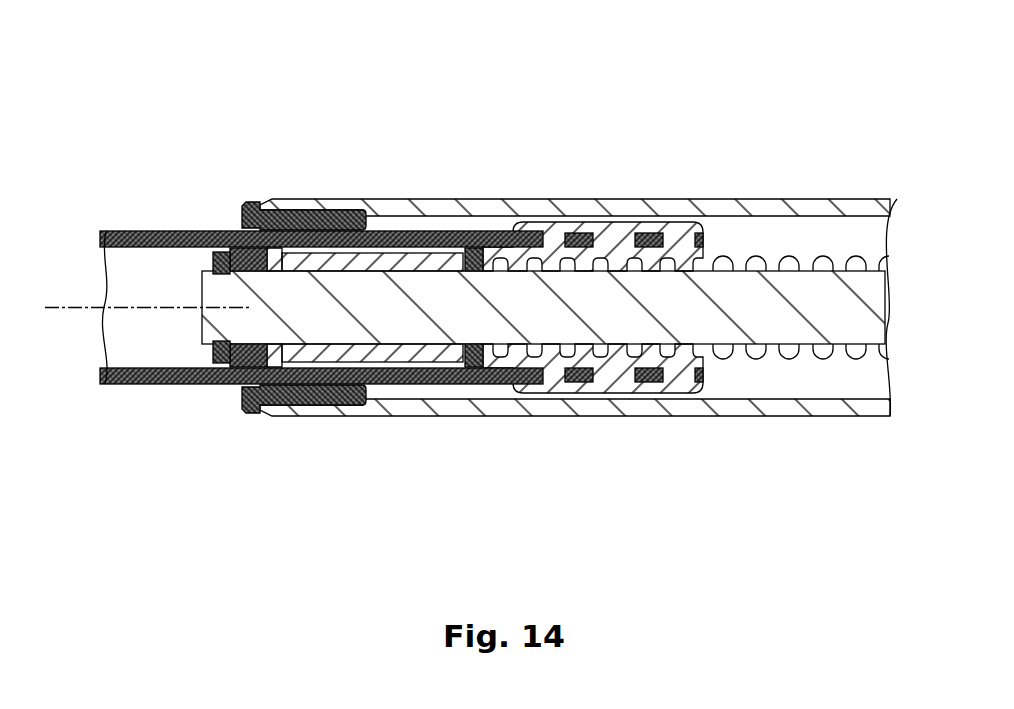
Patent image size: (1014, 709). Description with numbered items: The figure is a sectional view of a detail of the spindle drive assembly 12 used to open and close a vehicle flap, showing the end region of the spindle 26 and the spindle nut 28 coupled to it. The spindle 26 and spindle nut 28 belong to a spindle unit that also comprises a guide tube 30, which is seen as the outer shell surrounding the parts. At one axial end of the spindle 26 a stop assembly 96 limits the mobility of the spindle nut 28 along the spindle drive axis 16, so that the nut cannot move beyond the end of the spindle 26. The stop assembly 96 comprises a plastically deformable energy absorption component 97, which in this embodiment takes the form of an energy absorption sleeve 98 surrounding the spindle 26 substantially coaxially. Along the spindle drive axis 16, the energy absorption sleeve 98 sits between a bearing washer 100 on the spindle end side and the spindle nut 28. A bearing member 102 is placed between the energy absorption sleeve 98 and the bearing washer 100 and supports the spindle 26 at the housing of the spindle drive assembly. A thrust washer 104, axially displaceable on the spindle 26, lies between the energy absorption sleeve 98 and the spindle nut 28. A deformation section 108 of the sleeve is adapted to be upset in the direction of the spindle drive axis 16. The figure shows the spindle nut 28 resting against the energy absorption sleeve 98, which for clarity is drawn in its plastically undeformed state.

The spindle drive assembly 12 is at (568, 108).
The spindle drive axis 16 is at (55, 306).
The spindle 26 is at (756, 293).
The spindle nut 28 is at (613, 243).
The guide tube 30 is at (735, 407).
The stop assembly 96 is at (345, 442).
The energy absorption component 97 is at (392, 262).
The energy absorption sleeve 98 is at (334, 240).
The bearing washer 100 is at (223, 350).
The bearing member 102 is at (262, 268).
The thrust washer 104 is at (472, 255).
The deformation section 108 is at (415, 350).